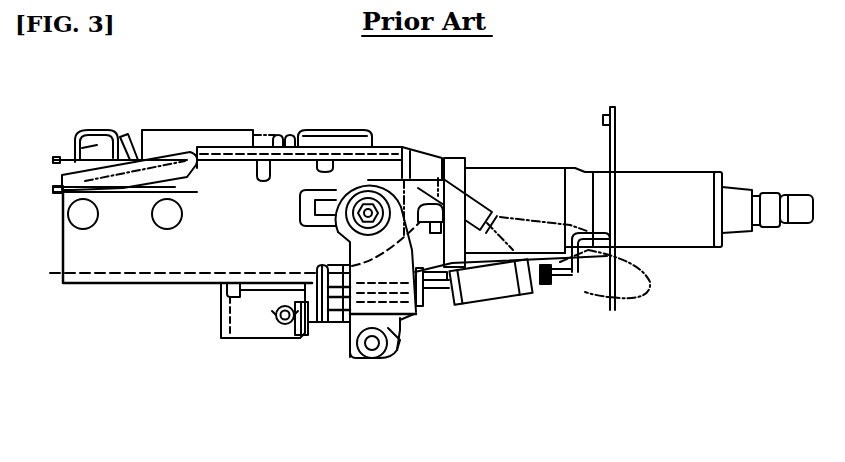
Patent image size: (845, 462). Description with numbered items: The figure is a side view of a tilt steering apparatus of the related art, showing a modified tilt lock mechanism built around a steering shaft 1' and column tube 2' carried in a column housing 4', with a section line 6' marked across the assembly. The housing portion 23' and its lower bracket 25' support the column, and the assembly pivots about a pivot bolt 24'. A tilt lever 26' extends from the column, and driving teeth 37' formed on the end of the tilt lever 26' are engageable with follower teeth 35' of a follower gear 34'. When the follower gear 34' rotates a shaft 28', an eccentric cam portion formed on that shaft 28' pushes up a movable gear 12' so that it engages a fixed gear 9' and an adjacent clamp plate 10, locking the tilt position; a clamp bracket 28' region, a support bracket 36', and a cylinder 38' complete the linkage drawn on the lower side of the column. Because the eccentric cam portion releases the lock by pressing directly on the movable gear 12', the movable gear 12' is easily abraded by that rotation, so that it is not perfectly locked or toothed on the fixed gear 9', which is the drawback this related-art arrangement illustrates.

The steering shaft 1' is at (768, 184).
The steering column tube 2' is at (593, 208).
The column housing 4' is at (435, 186).
The section line 6' is at (343, 248).
The fixed gear 9' is at (330, 325).
The clamp plate 10 is at (338, 325).
The movable gear 12' is at (313, 340).
The mounting bracket housing 23' is at (185, 263).
The pivot bolt 24' is at (388, 170).
The lower bracket 25' is at (263, 333).
The tilt lever 26' is at (502, 181).
The shaft 28' is at (400, 353).
The follower gear 34' is at (391, 372).
The follower teeth 35' is at (431, 347).
The support bracket 36' is at (605, 288).
The driving teeth 37' is at (450, 303).
The cylinder 38' is at (551, 302).